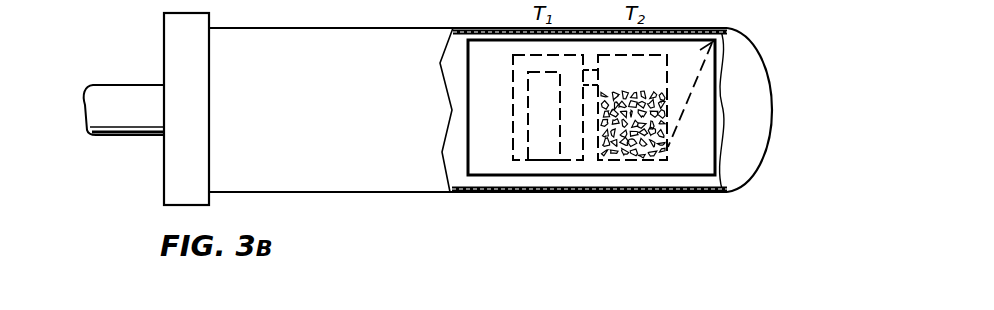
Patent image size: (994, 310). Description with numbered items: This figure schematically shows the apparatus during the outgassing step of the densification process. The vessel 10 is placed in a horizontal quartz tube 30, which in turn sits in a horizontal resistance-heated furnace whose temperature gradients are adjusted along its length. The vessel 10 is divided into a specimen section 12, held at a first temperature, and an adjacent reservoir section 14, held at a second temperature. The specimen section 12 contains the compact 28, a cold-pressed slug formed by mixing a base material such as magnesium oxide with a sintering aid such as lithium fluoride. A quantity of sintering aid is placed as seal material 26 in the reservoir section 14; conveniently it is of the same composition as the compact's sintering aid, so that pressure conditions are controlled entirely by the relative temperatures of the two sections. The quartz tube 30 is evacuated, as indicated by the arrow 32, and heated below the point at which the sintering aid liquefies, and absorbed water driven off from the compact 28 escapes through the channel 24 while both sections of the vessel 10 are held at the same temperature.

The vessel 10 is at (727, 28).
The specimen section 12 is at (572, 143).
The reservoir section 14 is at (632, 107).
The channel 24 is at (700, 92).
The seal material 26 is at (647, 143).
The compact 28 is at (543, 148).
The quartz tube 30 is at (347, 173).
The arrow 32 is at (50, 113).